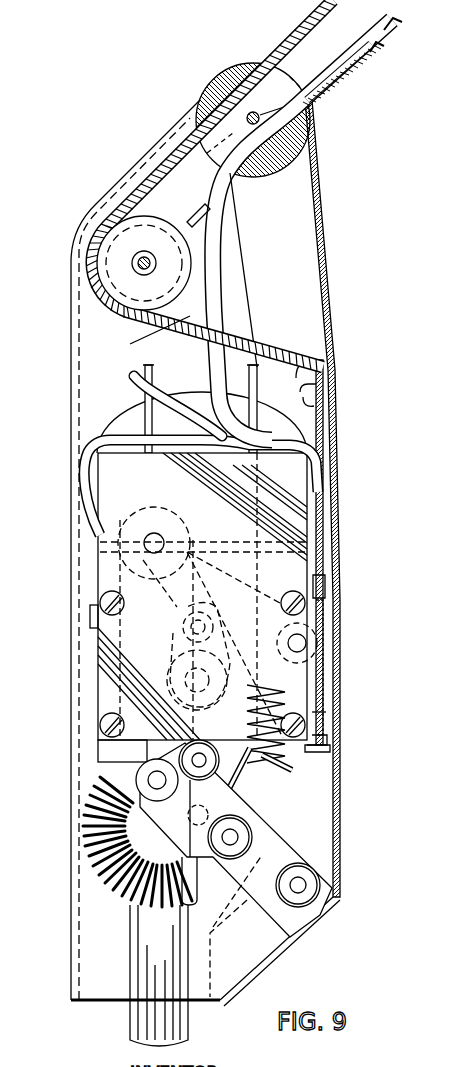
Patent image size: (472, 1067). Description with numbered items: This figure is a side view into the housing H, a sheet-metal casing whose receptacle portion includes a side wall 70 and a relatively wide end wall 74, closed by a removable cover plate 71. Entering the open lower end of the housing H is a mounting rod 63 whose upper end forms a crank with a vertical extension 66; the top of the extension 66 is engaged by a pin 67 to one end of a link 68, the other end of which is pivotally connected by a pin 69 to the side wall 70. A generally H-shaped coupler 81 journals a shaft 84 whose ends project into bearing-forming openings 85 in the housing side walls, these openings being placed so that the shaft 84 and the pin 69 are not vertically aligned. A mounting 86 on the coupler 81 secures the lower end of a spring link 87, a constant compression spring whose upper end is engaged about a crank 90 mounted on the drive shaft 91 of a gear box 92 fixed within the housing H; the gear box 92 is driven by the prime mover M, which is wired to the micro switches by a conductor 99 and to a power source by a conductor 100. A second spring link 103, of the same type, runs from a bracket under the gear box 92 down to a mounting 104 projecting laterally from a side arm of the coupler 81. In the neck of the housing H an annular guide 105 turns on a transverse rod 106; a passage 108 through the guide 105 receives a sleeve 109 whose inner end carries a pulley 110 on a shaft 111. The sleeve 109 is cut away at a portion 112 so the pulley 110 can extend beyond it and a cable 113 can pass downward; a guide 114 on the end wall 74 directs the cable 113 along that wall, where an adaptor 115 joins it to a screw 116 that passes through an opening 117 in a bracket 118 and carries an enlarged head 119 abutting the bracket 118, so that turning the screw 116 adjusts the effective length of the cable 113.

The mounting rod 63 is at (183, 1023).
The vertical extension 66 is at (120, 563).
The pin 67 is at (157, 543).
The link 68 is at (303, 617).
The pin 69 is at (303, 640).
The side wall 70 is at (298, 233).
The cover plate 71 is at (72, 355).
The end wall 74 is at (323, 257).
The coupler 81 is at (273, 913).
The shaft 84 is at (302, 880).
The bearing-forming openings 85 is at (302, 887).
The mounting 86 is at (213, 810).
The spring link 87 is at (267, 757).
The crank 90 is at (167, 657).
The drive shaft 91 is at (190, 687).
The gear box 92 is at (98, 583).
The conductor 99 is at (93, 442).
The conductor 100 is at (310, 762).
The spring link 103 is at (107, 847).
The mounting 104 is at (230, 830).
The annular guide 105 is at (237, 63).
The transverse rod 106 is at (308, 103).
The passage 108 is at (197, 127).
The sleeve 109 is at (180, 147).
The pulley 110 is at (107, 297).
The shaft 111 is at (133, 267).
The cut away portion 112 is at (187, 225).
The cable 113 is at (287, 50).
The guide 114 is at (333, 406).
The adaptor 115 is at (320, 587).
The screw 116 is at (320, 680).
The opening 117 is at (320, 728).
The bracket 118 is at (323, 713).
The enlarged head 119 is at (333, 750).
The housing H is at (347, 322).
The prime mover M is at (93, 410).